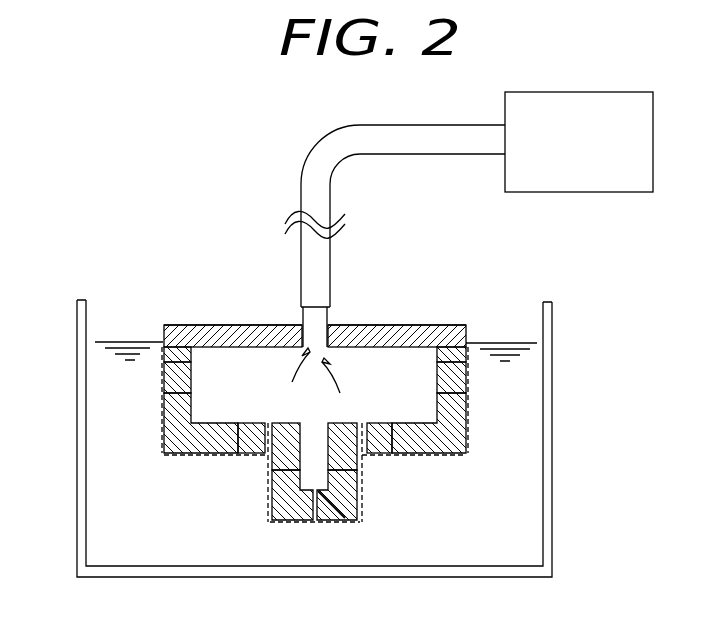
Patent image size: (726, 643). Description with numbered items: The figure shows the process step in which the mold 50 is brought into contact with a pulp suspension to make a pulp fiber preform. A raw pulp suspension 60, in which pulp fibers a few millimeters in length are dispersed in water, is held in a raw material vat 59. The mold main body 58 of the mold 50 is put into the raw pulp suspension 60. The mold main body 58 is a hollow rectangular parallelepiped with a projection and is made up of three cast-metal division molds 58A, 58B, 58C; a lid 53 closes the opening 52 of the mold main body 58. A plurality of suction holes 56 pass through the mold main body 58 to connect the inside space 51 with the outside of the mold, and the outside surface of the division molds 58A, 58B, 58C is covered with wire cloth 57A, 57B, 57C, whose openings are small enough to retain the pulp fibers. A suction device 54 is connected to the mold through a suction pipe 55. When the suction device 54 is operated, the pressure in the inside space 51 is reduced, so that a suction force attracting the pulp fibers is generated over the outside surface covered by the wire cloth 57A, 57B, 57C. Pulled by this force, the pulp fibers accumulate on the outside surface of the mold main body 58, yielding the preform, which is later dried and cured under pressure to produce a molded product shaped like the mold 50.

The mold 50 is at (458, 314).
The inside space 51 is at (276, 362).
The opening 52 is at (382, 345).
The lid 53 is at (200, 325).
The suction device 54 is at (580, 192).
The suction pipe 55 is at (304, 156).
The suction holes 56 is at (163, 392).
The wire cloth 57A is at (163, 433).
The wire cloth 57B is at (288, 521).
The wire cloth 57C is at (467, 453).
The mold main body 58 is at (320, 490).
The division mold 58A is at (226, 442).
The division mold 58B is at (325, 515).
The division mold 58C is at (414, 453).
The raw material vat 59 is at (552, 396).
The raw pulp suspension 60 is at (85, 540).